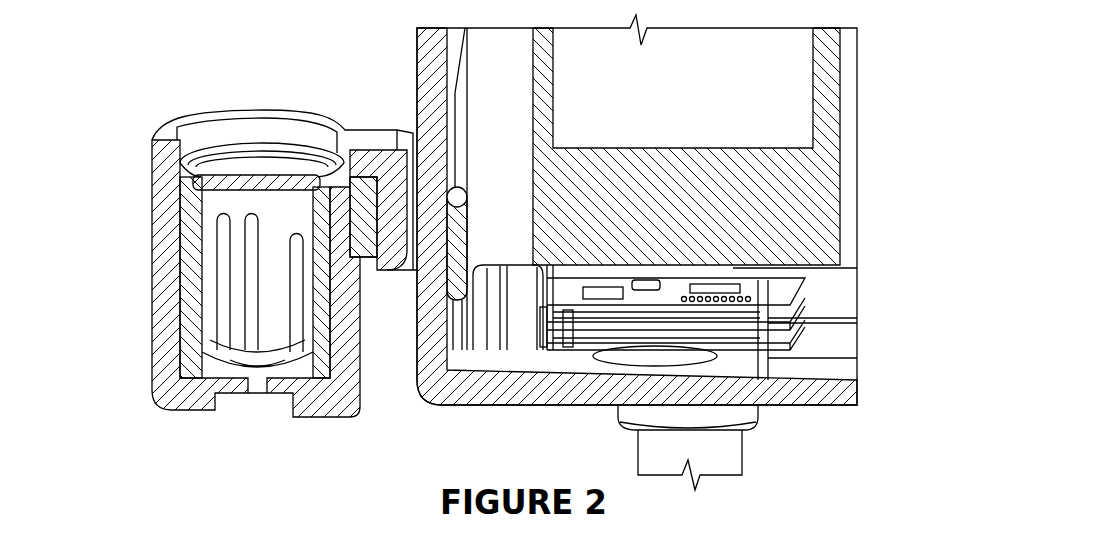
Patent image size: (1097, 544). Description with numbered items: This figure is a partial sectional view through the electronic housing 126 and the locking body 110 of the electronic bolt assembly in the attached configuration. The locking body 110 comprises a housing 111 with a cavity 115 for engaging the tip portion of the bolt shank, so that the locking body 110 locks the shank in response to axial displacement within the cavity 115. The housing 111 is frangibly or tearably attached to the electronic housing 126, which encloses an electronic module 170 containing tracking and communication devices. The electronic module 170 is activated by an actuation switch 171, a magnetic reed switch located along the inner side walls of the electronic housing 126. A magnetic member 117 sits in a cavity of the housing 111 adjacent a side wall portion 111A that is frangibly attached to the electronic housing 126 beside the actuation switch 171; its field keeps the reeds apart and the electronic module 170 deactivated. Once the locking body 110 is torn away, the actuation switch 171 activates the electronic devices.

The locking body 110 is at (236, 272).
The housing 111 is at (147, 268).
The side wall portion 111A is at (390, 273).
The cavity 115 is at (232, 285).
The magnetic member 117 is at (307, 190).
The electronic housing 126 is at (584, 249).
The electronic module 170 is at (695, 332).
The actuation switch 171 is at (453, 223).